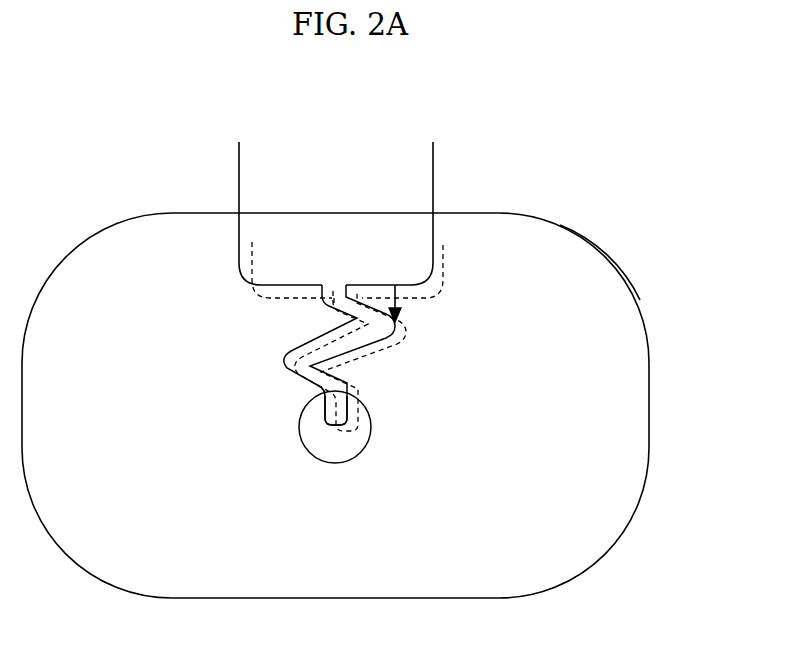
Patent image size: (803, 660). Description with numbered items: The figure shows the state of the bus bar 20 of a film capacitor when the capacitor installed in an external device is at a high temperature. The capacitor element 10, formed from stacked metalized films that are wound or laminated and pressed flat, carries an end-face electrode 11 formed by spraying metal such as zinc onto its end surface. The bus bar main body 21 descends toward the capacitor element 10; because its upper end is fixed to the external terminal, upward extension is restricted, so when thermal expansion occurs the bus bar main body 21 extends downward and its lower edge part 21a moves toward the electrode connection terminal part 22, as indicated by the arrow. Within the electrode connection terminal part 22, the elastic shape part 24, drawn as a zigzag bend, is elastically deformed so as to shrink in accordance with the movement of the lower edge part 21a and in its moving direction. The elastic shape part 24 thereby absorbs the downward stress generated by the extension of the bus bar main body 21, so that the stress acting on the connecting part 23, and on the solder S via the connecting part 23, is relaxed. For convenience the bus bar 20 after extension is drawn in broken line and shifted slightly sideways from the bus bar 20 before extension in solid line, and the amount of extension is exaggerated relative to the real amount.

The capacitor element 10 is at (533, 220).
The end-face electrode 11 is at (592, 303).
The bus bar 20 is at (225, 180).
The bus bar main body 21 is at (433, 178).
The lower edge part 21a is at (280, 285).
The electrode connection terminal part 22 is at (455, 389).
The connecting part 23 is at (372, 420).
The elastic shape part 24 is at (392, 335).
The solder S is at (318, 478).